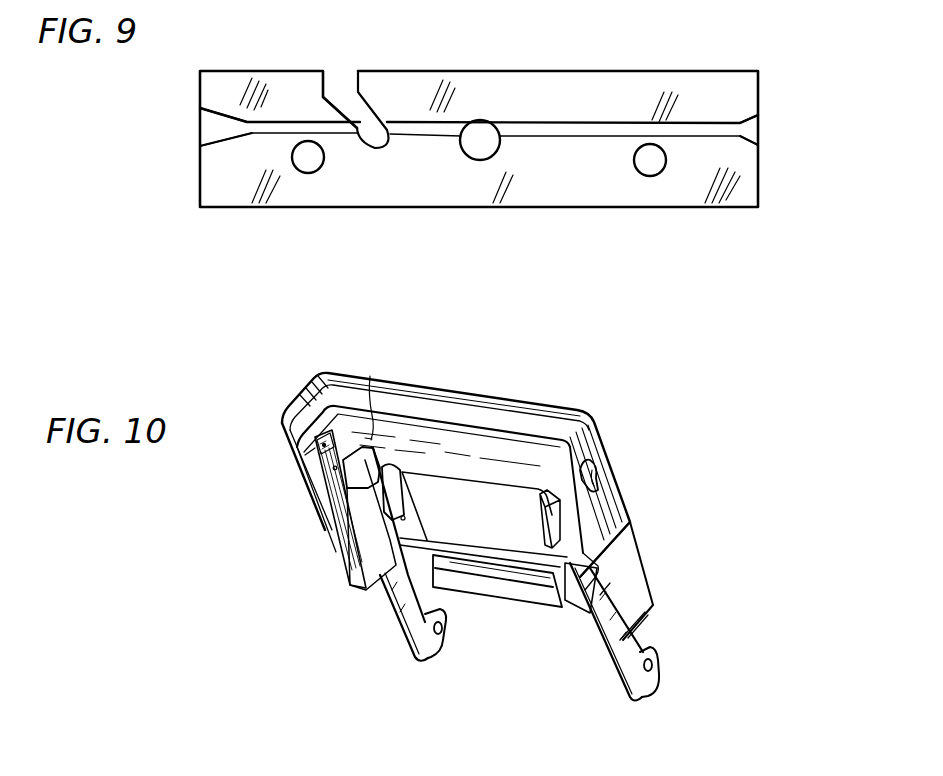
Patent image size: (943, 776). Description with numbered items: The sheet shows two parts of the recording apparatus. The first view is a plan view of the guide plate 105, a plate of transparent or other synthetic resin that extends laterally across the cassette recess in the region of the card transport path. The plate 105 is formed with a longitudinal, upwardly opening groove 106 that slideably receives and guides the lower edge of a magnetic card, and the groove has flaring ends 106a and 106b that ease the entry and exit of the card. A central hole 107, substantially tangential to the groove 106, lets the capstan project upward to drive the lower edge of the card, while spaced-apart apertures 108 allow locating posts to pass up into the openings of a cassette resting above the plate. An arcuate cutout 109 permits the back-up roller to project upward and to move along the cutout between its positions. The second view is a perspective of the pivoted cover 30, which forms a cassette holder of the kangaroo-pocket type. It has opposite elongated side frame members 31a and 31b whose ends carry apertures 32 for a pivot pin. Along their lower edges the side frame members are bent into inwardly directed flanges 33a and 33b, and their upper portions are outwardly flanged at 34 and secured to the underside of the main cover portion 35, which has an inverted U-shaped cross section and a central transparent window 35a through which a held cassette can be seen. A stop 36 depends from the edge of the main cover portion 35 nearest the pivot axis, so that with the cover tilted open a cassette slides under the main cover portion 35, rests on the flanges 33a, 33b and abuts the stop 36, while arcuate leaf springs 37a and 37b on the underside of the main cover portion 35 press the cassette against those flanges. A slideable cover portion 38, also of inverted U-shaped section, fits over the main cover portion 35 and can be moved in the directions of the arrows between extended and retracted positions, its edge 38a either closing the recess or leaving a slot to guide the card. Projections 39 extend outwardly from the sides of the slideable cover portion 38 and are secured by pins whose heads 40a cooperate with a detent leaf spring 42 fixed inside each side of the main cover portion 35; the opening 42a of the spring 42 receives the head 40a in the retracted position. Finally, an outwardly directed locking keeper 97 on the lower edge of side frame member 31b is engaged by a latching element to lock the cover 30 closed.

In FIG. 9, the guide plate 105 is at (545, 66).
In FIG. 9, the groove 106 is at (690, 128).
In FIG. 9, the flaring end 106a is at (212, 135).
In FIG. 9, the flaring end 106b is at (748, 128).
In FIG. 9, the central hole 107 is at (493, 150).
In FIG. 9, the apertures 108 is at (305, 172).
In FIG. 9, the arcuate cutout 109 is at (362, 92).
In FIG. 10, the cover 30 is at (532, 392).
In FIG. 10, the side frame member 31a is at (405, 628).
In FIG. 10, the side frame member 31b is at (630, 674).
In FIG. 10, the apertures 32 is at (655, 665).
In FIG. 10, the inwardly directed flange 33a is at (348, 555).
In FIG. 10, the inwardly directed flange 33b is at (562, 592).
In FIG. 10, the outward flange 34 is at (364, 393).
In FIG. 10, the main cover portion 35 is at (632, 550).
In FIG. 10, the window 35a is at (460, 480).
In FIG. 10, the stop 36 is at (515, 595).
In FIG. 10, the arcuate leaf spring 37a is at (406, 520).
In FIG. 10, the arcuate leaf spring 37b is at (537, 502).
In FIG. 10, the slideable cover portion 38 is at (600, 493).
In FIG. 10, the edge 38a is at (460, 393).
In FIG. 10, the projections 39 is at (583, 410).
In FIG. 10, the head 40a is at (320, 468).
In FIG. 10, the leaf spring 42 is at (348, 520).
In FIG. 10, the opening 42a is at (318, 497).
In FIG. 10, the keeper 97 is at (590, 565).